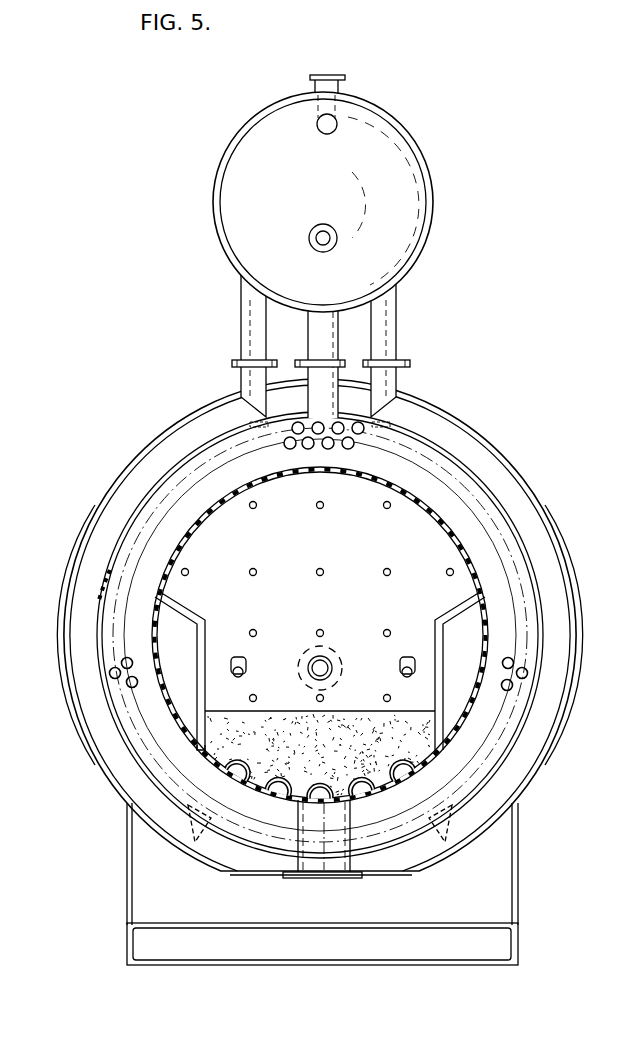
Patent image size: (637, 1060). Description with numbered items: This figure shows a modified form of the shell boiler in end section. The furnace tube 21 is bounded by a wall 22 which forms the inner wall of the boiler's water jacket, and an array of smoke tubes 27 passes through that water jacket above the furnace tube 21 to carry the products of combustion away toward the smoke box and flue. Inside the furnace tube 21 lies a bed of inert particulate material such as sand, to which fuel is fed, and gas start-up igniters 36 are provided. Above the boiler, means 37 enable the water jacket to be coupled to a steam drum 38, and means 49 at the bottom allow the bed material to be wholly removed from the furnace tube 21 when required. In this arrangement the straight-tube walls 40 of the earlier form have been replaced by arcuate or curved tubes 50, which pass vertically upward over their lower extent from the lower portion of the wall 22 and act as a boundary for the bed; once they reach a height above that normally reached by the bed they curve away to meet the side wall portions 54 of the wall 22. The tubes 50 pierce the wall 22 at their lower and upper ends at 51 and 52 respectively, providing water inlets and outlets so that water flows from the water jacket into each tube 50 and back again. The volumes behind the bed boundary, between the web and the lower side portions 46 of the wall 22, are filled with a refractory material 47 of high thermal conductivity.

The furnace tube 21 is at (331, 539).
The wall 22 is at (198, 522).
The smoke tubes 27 is at (362, 436).
The gas start-up igniters 36 is at (244, 666).
The means for coupling the water jacket to a steam drum 37 is at (385, 320).
The steam drum 38 is at (335, 184).
The walls 40 is at (221, 647).
The lower side portions 46 is at (172, 722).
The refractory material 47 is at (172, 684).
The means for removing bed material 49 is at (332, 878).
The arcuate or curved tubes 50 is at (200, 632).
The lower end piercing 51 is at (198, 752).
The upper end piercing 52 is at (153, 605).
The side wall portions 54 is at (151, 600).